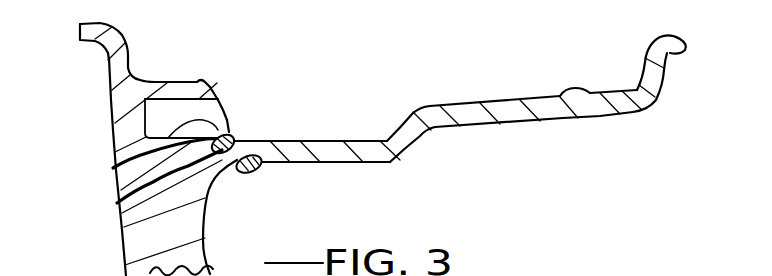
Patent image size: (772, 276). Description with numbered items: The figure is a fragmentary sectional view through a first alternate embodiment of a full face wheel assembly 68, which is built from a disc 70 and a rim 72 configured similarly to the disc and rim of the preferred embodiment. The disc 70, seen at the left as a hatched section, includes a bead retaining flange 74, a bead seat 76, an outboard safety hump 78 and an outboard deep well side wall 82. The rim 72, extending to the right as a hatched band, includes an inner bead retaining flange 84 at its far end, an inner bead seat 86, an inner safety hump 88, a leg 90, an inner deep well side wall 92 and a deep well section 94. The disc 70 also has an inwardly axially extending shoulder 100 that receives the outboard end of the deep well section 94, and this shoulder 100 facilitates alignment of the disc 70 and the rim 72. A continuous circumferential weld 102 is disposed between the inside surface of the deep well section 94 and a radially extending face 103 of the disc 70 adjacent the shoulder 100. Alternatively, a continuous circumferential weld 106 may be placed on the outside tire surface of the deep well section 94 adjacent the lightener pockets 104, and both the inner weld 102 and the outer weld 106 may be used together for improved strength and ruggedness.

The full face wheel assembly 68 is at (480, 90).
The disc 70 is at (97, 118).
The rim 72 is at (493, 101).
The bead retaining flange 74 is at (127, 28).
The bead seat 76 is at (155, 79).
The outboard safety hump 78 is at (216, 85).
The outboard deep well side wall 82 is at (228, 121).
The inner bead retaining flange 84 is at (682, 43).
The inner bead seat 86 is at (603, 92).
The inner safety hump 88 is at (574, 90).
The leg 90 is at (465, 107).
The inner deep well side wall 92 is at (393, 128).
The deep well section 94 is at (317, 140).
The shoulder 100 is at (254, 172).
The continuous circumferential weld 102 is at (243, 185).
The radially extending face 103 is at (120, 200).
The lightener pockets 104 is at (148, 102).
The continuous circumferential weld 106 is at (118, 169).